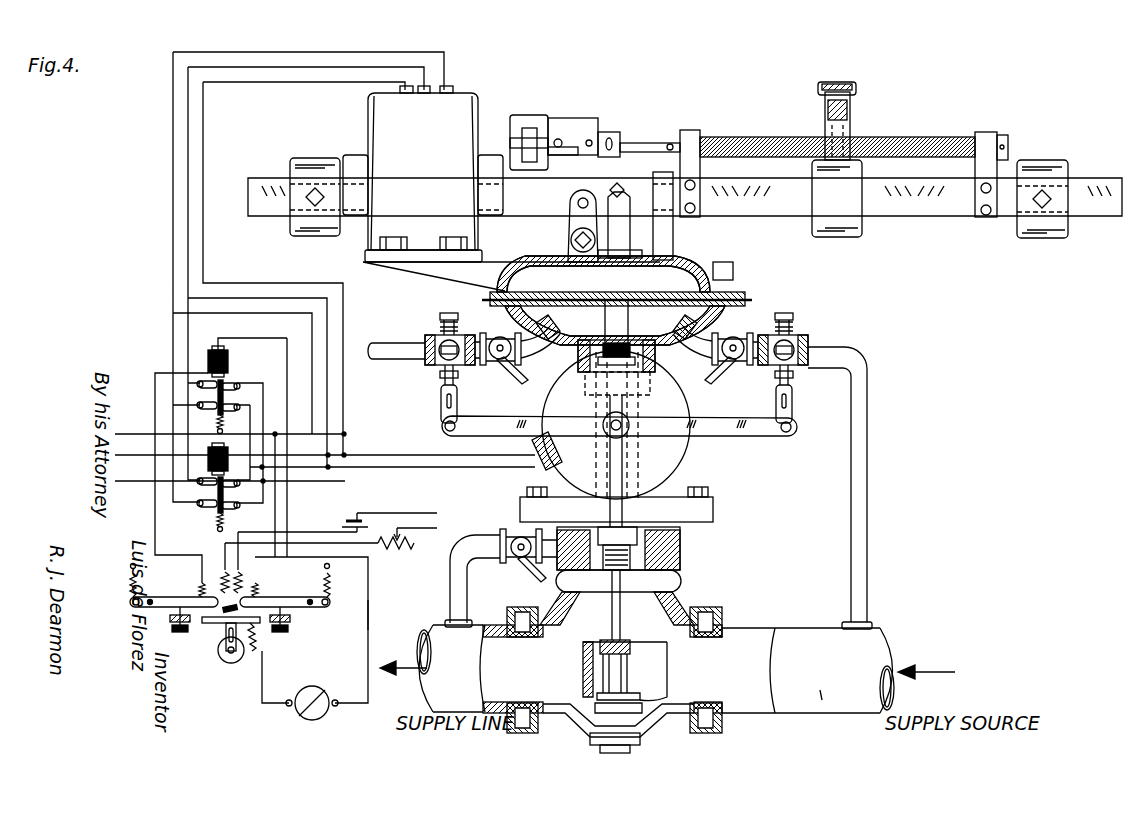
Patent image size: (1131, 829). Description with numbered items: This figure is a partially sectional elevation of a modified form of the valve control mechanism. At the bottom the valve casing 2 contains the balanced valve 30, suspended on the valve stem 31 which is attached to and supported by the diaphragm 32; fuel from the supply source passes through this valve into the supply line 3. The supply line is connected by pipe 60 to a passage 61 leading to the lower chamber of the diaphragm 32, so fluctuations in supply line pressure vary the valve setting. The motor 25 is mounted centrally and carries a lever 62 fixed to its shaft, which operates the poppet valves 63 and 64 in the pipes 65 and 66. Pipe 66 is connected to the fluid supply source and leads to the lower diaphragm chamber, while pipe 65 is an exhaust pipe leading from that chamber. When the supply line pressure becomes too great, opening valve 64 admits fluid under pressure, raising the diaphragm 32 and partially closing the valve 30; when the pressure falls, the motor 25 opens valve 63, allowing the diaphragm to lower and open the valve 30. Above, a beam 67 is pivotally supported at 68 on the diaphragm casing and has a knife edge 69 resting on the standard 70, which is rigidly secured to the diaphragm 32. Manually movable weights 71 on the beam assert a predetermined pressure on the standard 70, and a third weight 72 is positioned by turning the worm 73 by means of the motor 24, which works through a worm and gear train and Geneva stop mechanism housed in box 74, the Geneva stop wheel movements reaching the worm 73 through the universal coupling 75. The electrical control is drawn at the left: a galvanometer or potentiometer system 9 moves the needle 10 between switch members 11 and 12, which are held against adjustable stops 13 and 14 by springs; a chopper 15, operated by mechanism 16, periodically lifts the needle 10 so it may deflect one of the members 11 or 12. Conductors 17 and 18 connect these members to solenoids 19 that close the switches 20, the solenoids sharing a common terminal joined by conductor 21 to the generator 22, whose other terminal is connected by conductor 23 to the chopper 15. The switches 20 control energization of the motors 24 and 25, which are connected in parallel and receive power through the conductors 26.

The valve casing 2 is at (580, 710).
The supply line 3 is at (825, 703).
The galvanometer or potentiometer system 9 is at (389, 531).
The galvanometer needle 10 is at (225, 612).
The switch member 11 is at (282, 602).
The switch member 12 is at (165, 598).
The adjustable stop 13 is at (280, 630).
The adjustable stop 14 is at (177, 630).
The chopper 15 is at (223, 623).
The chopper operating mechanism 16 is at (239, 663).
The conductor 17 is at (275, 515).
The conductor 18 is at (154, 536).
The solenoid 19 is at (208, 359).
The switch 20 is at (228, 386).
The conductor 21 is at (369, 613).
The generator 22 is at (304, 717).
The conductor 23 is at (261, 673).
The motor 24 is at (400, 124).
The motor 25 is at (676, 461).
The conductors 26 is at (125, 481).
The balanced valve 30 is at (628, 647).
The valve stem 31 is at (613, 622).
The diaphragm 32 is at (700, 273).
The pipe 60 is at (453, 577).
The passage 61 is at (632, 530).
The lever 62 is at (760, 433).
The poppet valve 63 is at (437, 338).
The poppet valve 64 is at (800, 338).
The pipe 65 is at (392, 357).
The pipe 66 is at (858, 465).
The beam 67 is at (898, 214).
The pivot 68 is at (578, 210).
The knife edge 69 is at (618, 188).
The standard 70 is at (622, 236).
The manually movable weight 71 is at (318, 220).
The third weight 72 is at (842, 228).
The worm 73 is at (753, 138).
The box 74 is at (525, 122).
The universal coupling 75 is at (590, 131).